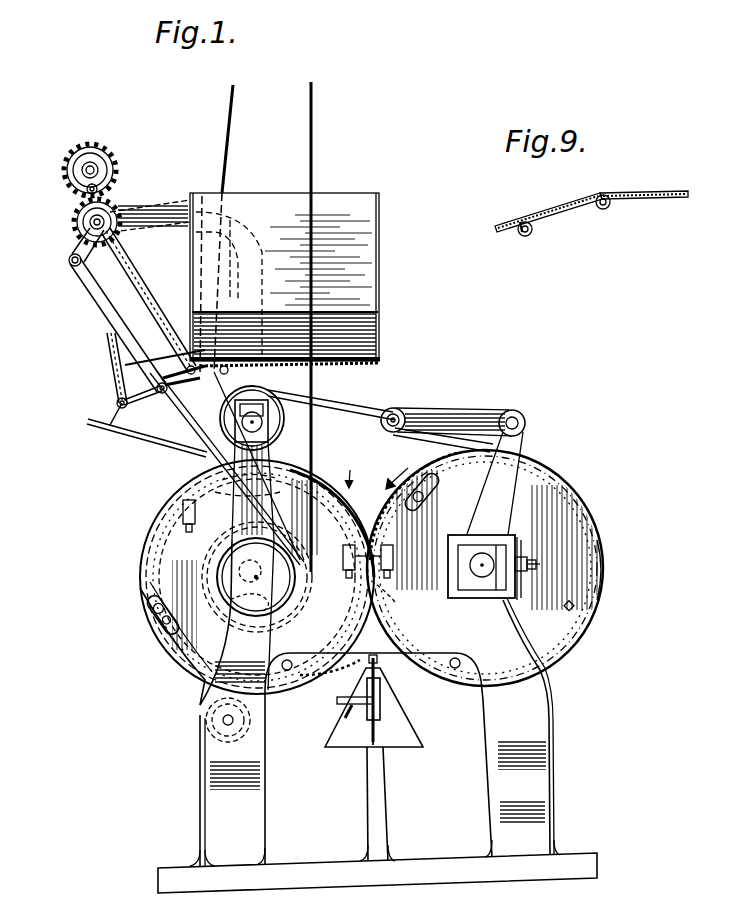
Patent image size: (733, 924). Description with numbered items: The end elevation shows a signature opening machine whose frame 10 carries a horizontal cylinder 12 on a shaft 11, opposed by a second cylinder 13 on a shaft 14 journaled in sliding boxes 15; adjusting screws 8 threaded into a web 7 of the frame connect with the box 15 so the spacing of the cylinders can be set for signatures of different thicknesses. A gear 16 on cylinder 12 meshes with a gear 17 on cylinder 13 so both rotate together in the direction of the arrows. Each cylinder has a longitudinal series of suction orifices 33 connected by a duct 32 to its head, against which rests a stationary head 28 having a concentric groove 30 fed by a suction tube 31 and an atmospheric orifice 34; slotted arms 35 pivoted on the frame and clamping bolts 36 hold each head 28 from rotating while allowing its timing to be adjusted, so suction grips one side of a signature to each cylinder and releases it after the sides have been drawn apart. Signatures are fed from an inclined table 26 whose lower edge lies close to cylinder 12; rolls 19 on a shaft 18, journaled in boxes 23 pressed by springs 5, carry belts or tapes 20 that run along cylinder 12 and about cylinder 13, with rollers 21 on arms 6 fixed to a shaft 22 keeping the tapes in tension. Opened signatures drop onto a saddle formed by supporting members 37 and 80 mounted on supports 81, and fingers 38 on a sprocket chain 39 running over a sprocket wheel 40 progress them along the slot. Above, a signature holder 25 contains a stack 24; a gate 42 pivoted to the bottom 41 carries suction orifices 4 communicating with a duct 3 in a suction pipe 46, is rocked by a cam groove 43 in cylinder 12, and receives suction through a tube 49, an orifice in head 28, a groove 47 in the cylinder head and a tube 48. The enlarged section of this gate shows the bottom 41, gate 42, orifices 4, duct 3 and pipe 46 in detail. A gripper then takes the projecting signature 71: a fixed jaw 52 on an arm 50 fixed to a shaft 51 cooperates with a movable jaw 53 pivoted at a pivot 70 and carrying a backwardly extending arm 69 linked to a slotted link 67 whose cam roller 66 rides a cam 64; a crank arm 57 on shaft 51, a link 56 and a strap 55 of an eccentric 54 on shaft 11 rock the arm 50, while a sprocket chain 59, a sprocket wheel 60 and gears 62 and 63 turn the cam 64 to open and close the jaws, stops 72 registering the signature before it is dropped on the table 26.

In FIG. 9, the duct 3 is at (528, 237).
In FIG. 9, the suction orifices 4 is at (520, 222).
In FIG. 1, the springs 5 is at (272, 427).
In FIG. 1, the arms 6 is at (446, 410).
In FIG. 1, the web 7 is at (513, 540).
In FIG. 1, the adjusting screws 8 is at (538, 565).
In FIG. 1, the frame 10 is at (546, 712).
In FIG. 1, the shaft 11 is at (264, 580).
In FIG. 1, the cylinder 12 is at (141, 572).
In FIG. 1, the cylinder 13 is at (601, 577).
In FIG. 1, the shaft 14 is at (480, 578).
In FIG. 1, the boxes 15 is at (466, 545).
In FIG. 1, the gear 16 is at (316, 674).
In FIG. 1, the gear 17 is at (386, 492).
In FIG. 1, the shaft 18 is at (270, 436).
In FIG. 1, the rolls 19 is at (314, 444).
In FIG. 1, the belts or tapes 20 is at (340, 410).
In FIG. 1, the rollers 21 is at (393, 408).
In FIG. 1, the shaft 22 is at (526, 423).
In FIG. 1, the boxes 23 is at (262, 424).
In FIG. 1, the stack 24 is at (318, 311).
In FIG. 1, the signature holder 25 is at (381, 278).
In FIG. 1, the inclined table 26 is at (116, 432).
In FIG. 1, the disk or head 28 is at (142, 600).
In FIG. 1, the groove 30 is at (342, 598).
In FIG. 1, the tube 31 is at (393, 548).
In FIG. 1, the duct 32 is at (566, 608).
In FIG. 1, the suction orifices 33 is at (379, 660).
In FIG. 1, the orifice 34 is at (290, 672).
In FIG. 1, the arms 35 is at (440, 482).
In FIG. 1, the clamping bolt 36 is at (416, 503).
In FIG. 1, the supporting member 37 is at (419, 735).
In FIG. 1, the pins or fingers 38 is at (371, 735).
In FIG. 1, the sprocket chain 39 is at (368, 716).
In FIG. 1, the sprocket wheel 40 is at (381, 698).
In FIG. 1, the bottom 41 is at (330, 364).
In FIG. 9, the bottom 41 is at (645, 205).
In FIG. 1, the gate 42 is at (256, 376).
In FIG. 9, the gate 42 is at (574, 212).
In FIG. 1, the cam groove 43 is at (160, 548).
In FIG. 1, the suction pipe 46 is at (226, 355).
In FIG. 9, the suction pipe 46 is at (519, 233).
In FIG. 1, the groove 47 is at (241, 577).
In FIG. 1, the tube 48 is at (180, 502).
In FIG. 1, the tube 49 is at (268, 486).
In FIG. 1, the arm 50 is at (117, 402).
In FIG. 1, the shaft 51 is at (80, 233).
In FIG. 1, the fixed jaw 52 is at (167, 393).
In FIG. 1, the movable jaw 53 is at (186, 348).
In FIG. 1, the eccentric 54 is at (253, 589).
In FIG. 1, the strap 55 is at (270, 640).
In FIG. 1, the link 56 is at (96, 305).
In FIG. 1, the crank arm 57 is at (69, 259).
In FIG. 1, the sprocket chain 59 is at (137, 283).
In FIG. 1, the sprocket wheel 60 is at (112, 215).
In FIG. 1, the gear 62 is at (73, 222).
In FIG. 1, the gear 63 is at (114, 158).
In FIG. 1, the cam 64 is at (68, 165).
In FIG. 1, the cam roller 66 is at (82, 189).
In FIG. 1, the link 67 is at (108, 348).
In FIG. 1, the arm 69 is at (116, 412).
In FIG. 1, the pivot 70 is at (158, 392).
In FIG. 1, the signature 71 is at (204, 322).
In FIG. 1, the stop 72 is at (180, 383).
In FIG. 1, the supporting member 80 is at (345, 720).
In FIG. 1, the supports 81 is at (378, 793).